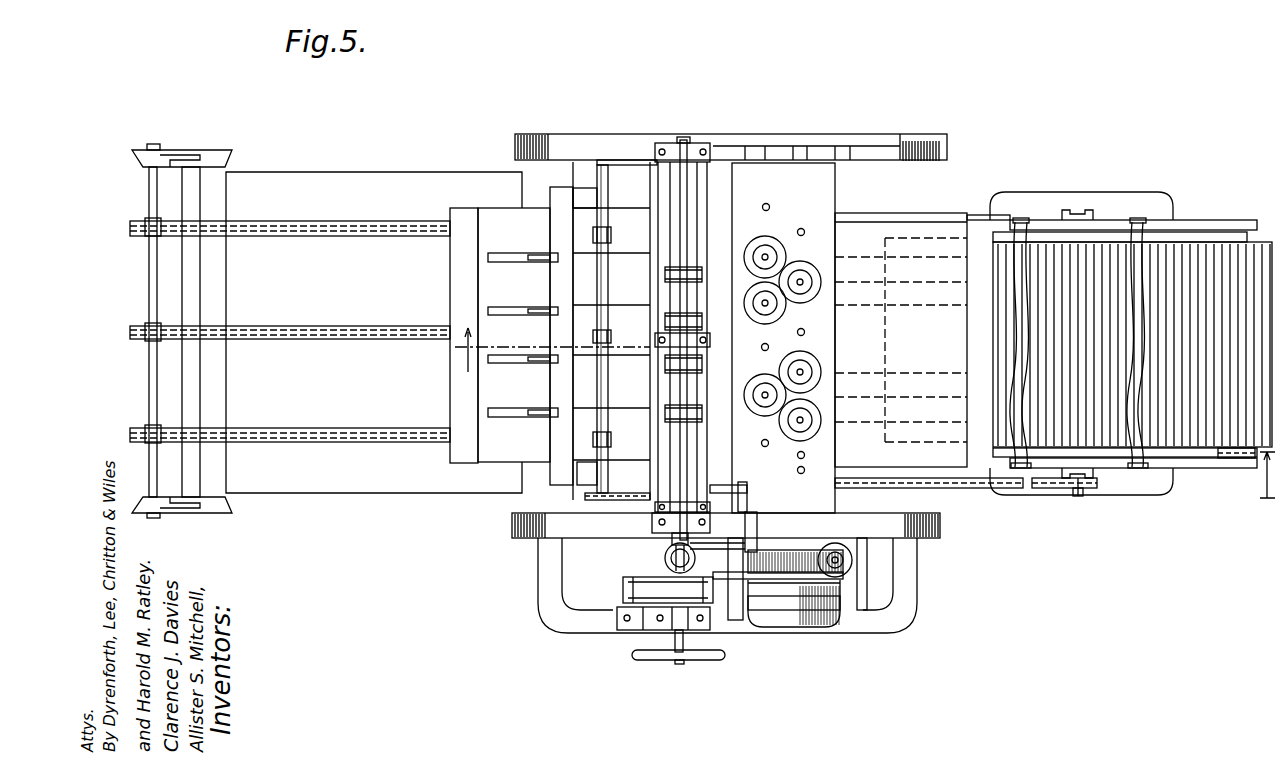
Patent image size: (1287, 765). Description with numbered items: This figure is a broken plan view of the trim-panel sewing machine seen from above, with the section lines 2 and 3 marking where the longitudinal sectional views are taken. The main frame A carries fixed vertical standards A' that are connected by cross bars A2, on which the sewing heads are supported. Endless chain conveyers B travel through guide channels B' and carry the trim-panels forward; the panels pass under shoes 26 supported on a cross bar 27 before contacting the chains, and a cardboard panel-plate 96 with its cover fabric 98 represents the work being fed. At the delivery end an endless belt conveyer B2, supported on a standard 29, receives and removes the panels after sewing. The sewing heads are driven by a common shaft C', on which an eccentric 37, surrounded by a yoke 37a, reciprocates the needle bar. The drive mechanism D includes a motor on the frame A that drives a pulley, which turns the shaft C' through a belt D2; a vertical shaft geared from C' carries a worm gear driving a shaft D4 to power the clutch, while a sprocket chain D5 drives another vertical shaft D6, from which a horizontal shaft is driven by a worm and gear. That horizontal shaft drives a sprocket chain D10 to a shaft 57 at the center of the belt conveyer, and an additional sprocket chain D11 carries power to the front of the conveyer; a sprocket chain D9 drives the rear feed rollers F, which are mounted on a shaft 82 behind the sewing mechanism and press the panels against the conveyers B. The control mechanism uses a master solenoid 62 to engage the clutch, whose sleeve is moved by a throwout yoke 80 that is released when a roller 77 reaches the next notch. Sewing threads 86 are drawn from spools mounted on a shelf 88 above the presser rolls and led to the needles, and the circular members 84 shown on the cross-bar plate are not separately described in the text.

The vertical standards A' is at (731, 131).
The main frame A is at (708, 573).
The cross bars A2 is at (700, 437).
The endless chain conveyers B is at (170, 331).
The guide channels B' is at (290, 311).
The endless belt conveyer B2 is at (1175, 250).
The common shaft C' is at (708, 338).
The drive mechanism D is at (795, 627).
The belt D2 is at (635, 590).
The shaft D4 is at (783, 612).
The sprocket chain D5 is at (825, 605).
The vertical shaft D6 is at (845, 553).
The sprocket chain D9 is at (634, 493).
The sprocket chain D10 is at (968, 490).
The sprocket chain D11 is at (1228, 460).
The rear feed rollers F is at (613, 237).
The section line 2 is at (1262, 475).
The section line 3 is at (551, 350).
The shoes 26 is at (490, 308).
The cross bar 27 is at (558, 228).
The standard 29 is at (1110, 208).
The eccentric 37 is at (675, 312).
The yoke 37a is at (680, 407).
The shaft 57 is at (1078, 497).
The master solenoid 62 is at (728, 513).
The roller 77 is at (920, 215).
The clutch throwout yoke 80 is at (722, 485).
The shaft 82 is at (598, 185).
The rollers 84 is at (800, 303).
The threads 86 is at (873, 305).
The shelf 88 is at (826, 433).
The panel-plate 96 is at (450, 393).
The cover fabric 98 is at (862, 222).